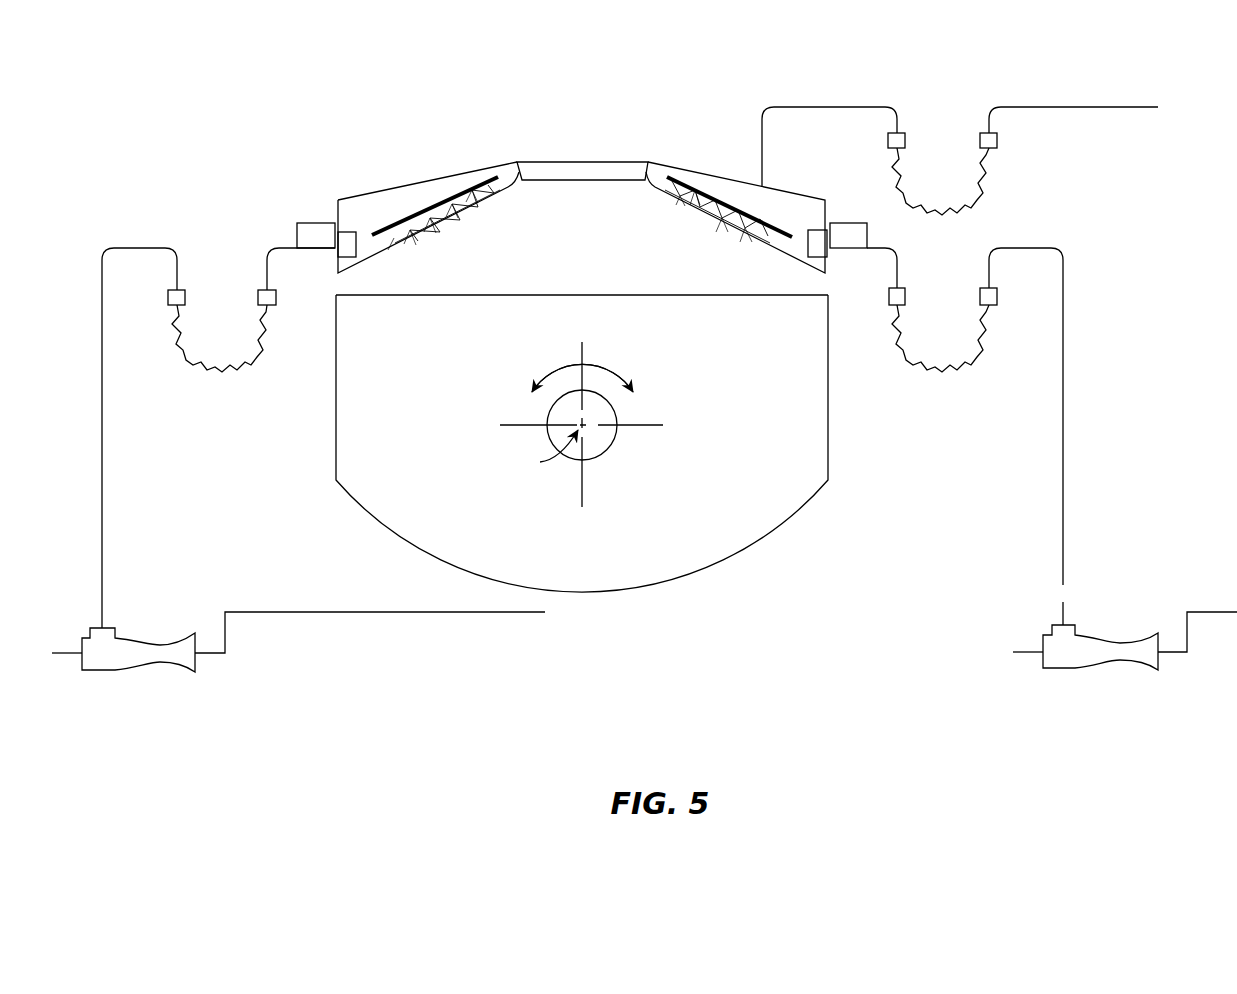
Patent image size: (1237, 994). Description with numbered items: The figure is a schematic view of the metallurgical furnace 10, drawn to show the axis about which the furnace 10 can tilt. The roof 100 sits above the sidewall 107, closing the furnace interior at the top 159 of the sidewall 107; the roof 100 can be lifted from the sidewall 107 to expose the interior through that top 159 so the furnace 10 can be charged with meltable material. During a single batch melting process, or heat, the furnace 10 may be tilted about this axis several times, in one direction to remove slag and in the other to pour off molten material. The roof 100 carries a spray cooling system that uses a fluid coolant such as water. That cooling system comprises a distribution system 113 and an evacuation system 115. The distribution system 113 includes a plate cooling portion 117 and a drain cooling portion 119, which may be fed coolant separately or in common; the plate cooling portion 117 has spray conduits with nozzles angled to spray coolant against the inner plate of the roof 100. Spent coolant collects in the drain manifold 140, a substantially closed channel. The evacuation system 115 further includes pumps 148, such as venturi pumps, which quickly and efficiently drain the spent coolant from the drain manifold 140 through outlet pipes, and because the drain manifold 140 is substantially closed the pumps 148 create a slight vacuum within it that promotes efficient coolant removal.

The metallurgical furnace 10 is at (844, 458).
The roof 100 is at (473, 126).
The sidewall 107 is at (313, 446).
The distribution system 113 is at (776, 90).
The evacuation system 115 is at (329, 259).
The plate cooling portion 117 is at (415, 199).
The drain cooling portion 119 is at (370, 226).
The drain manifold 140 is at (821, 228).
The pumps 148 is at (104, 667).
The top 159 is at (572, 295).